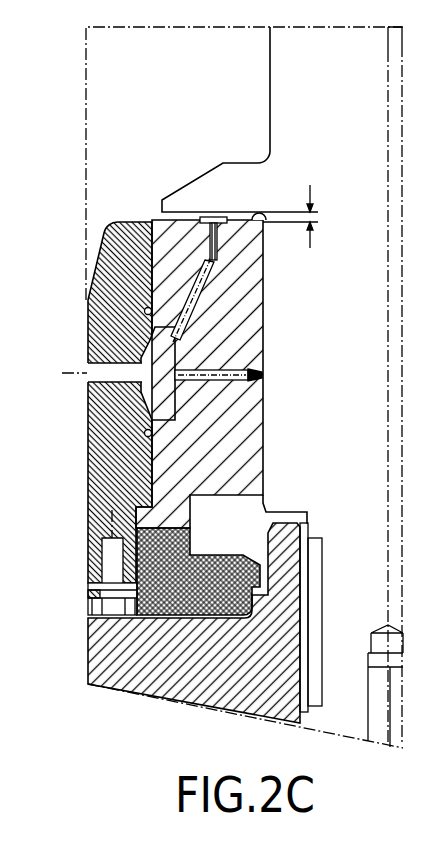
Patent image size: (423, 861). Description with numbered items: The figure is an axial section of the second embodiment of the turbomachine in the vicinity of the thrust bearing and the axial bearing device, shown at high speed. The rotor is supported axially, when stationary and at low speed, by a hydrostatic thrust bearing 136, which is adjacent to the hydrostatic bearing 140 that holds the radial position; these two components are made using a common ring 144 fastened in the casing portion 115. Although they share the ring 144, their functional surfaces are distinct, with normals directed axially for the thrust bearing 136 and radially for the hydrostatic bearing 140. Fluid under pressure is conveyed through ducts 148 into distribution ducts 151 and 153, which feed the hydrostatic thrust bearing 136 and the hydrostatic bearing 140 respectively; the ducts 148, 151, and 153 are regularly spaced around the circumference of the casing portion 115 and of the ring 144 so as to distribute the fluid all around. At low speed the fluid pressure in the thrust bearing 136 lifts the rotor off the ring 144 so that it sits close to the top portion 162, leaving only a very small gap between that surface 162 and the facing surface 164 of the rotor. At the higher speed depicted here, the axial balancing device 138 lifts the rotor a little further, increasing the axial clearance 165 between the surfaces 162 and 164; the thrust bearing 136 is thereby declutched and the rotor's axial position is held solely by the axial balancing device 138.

The casing portion 115 is at (118, 452).
The hydrostatic thrust bearing 136 is at (182, 218).
The axial balancing device 138 is at (165, 620).
The hydrostatic bearing 140 is at (268, 323).
The common ring 144 is at (223, 424).
The duct 148 is at (95, 373).
The distribution duct 151 is at (229, 374).
The distribution duct 153 is at (193, 288).
The top portion 162 is at (232, 213).
The facing surface 164 is at (243, 212).
The axial clearance 165 is at (310, 216).